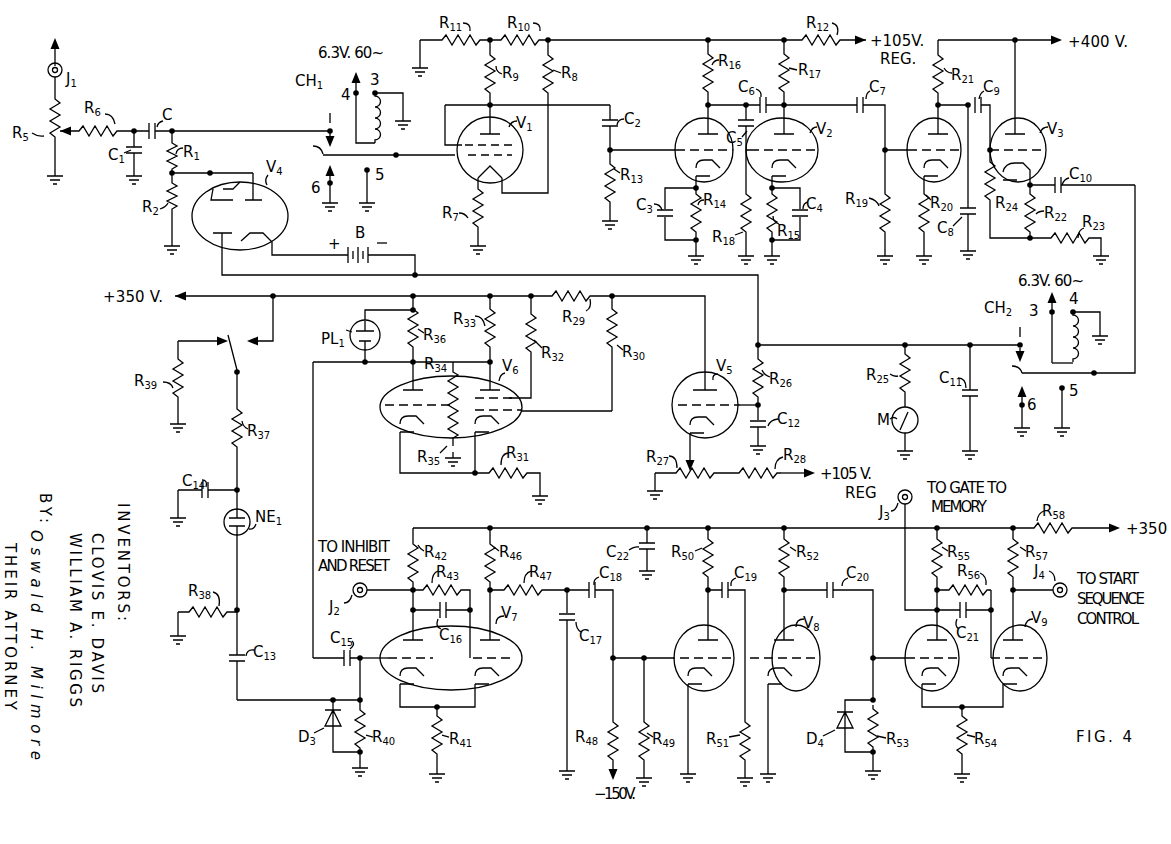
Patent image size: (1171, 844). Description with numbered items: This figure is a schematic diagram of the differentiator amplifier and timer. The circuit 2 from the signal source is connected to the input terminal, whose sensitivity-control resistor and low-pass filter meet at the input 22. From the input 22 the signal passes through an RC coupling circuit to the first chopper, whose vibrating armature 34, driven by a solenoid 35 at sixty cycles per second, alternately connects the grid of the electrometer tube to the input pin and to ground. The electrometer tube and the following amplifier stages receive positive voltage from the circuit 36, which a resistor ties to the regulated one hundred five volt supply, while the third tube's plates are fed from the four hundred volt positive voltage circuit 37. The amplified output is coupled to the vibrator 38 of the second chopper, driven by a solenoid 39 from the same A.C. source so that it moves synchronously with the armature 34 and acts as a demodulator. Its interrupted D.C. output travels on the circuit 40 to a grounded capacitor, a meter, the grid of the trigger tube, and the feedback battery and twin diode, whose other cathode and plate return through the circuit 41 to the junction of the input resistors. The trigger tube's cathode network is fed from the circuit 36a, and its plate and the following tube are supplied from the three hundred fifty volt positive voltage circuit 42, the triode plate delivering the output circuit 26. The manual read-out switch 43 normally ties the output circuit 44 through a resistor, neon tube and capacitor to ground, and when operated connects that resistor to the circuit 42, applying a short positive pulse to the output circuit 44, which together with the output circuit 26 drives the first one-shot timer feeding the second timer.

The circuit 2 is at (51, 42).
The input 22 is at (134, 129).
The output circuit 26 is at (314, 475).
The vibrating armature 34 is at (321, 153).
The solenoid 35 is at (381, 139).
The circuit 36 is at (570, 41).
The circuit 36a is at (810, 480).
The positive voltage circuit 37 is at (1032, 37).
The vibrator 38 is at (1012, 373).
The solenoid 39 is at (1079, 356).
The circuit 40 is at (835, 344).
The circuit 41 is at (221, 173).
The positive voltage circuit 42 is at (341, 302).
The switch 43 is at (238, 355).
The output circuit 44 is at (278, 702).